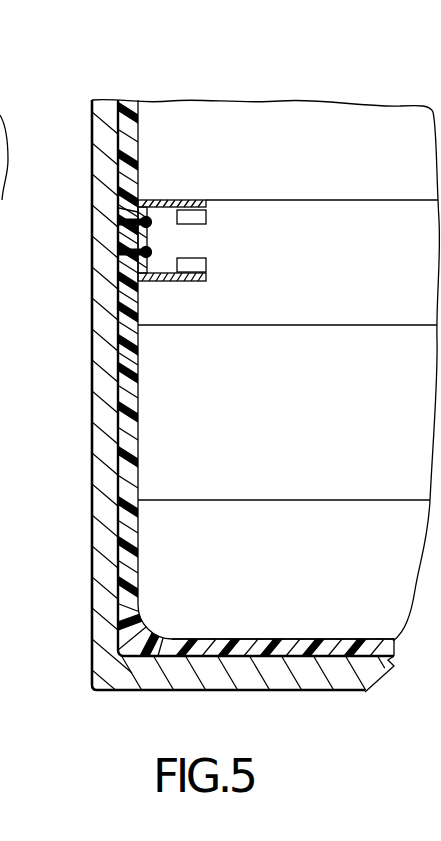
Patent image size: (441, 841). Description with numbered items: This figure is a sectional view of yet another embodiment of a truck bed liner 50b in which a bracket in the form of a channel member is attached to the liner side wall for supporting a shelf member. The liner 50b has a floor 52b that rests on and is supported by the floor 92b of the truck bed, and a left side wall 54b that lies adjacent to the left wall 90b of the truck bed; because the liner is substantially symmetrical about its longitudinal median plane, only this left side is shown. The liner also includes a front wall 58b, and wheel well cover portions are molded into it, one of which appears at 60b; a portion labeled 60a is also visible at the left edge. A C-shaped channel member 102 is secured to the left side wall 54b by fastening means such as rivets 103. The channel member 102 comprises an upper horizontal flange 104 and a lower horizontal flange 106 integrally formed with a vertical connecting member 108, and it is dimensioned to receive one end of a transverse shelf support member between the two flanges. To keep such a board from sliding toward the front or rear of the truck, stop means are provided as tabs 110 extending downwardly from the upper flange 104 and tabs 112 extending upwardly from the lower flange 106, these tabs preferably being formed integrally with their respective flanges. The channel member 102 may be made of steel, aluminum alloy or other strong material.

The liner 50b is at (222, 45).
The front wall 58b is at (325, 125).
The wheel well cover portion 60b is at (393, 297).
The vertical connecting member 108 is at (118, 208).
The left side wall 54b is at (120, 222).
The shelf 60a is at (25, 286).
The channel member 102 is at (147, 254).
The rivets 103 is at (152, 222).
The upper horizontal flange 104 is at (180, 200).
The lower horizontal flange 106 is at (162, 281).
The tabs 110 is at (197, 217).
The tabs 112 is at (197, 266).
The left wall of truck bed 90b is at (108, 553).
The floor 52b is at (345, 648).
The floor of truck bed 92b is at (352, 714).